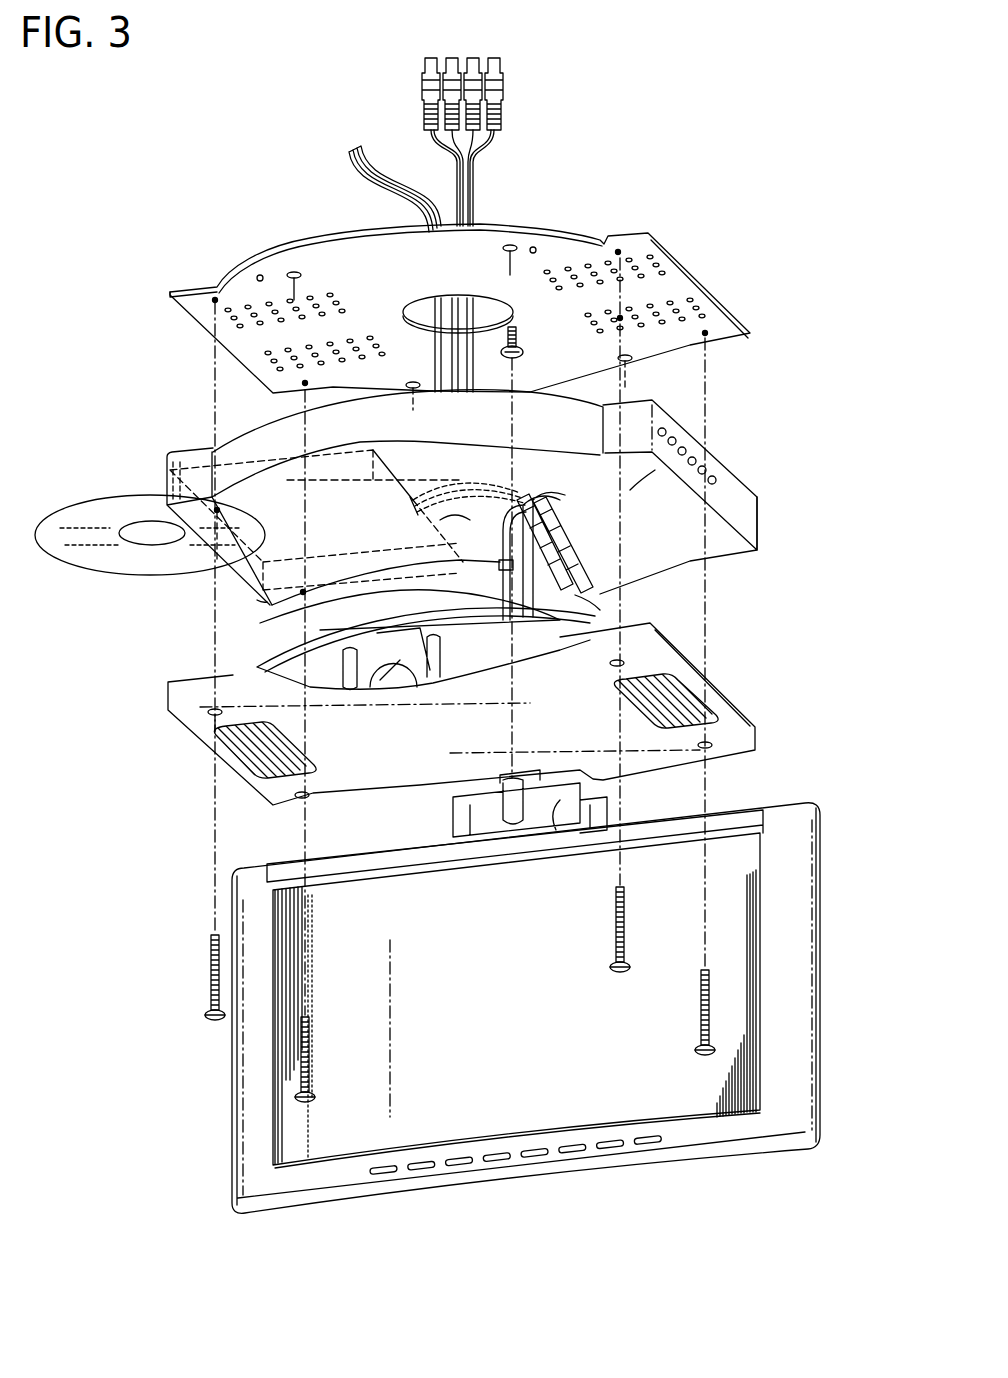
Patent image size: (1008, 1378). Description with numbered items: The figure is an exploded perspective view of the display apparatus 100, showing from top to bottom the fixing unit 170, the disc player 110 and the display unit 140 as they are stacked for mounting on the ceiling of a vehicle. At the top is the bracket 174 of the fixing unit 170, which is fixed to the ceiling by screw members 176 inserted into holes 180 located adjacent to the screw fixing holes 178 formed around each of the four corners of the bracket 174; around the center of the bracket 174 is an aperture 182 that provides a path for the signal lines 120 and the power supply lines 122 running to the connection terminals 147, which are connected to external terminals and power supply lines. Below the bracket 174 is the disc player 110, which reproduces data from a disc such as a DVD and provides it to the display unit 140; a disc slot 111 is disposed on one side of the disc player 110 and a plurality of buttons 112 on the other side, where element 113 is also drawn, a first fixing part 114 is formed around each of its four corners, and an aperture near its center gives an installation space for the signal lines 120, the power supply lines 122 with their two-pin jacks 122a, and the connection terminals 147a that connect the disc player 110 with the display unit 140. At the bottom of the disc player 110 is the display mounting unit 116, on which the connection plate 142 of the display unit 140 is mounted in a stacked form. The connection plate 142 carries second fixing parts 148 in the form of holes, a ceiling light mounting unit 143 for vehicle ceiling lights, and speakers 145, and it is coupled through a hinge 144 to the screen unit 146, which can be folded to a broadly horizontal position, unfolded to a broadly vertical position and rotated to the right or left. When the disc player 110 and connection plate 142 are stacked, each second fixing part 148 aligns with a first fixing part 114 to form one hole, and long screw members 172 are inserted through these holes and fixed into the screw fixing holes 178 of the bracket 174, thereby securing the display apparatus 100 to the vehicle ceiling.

The display apparatus 100 is at (235, 230).
The disc player 110 is at (740, 489).
The disc slot 111 is at (167, 472).
The buttons 112 is at (672, 428).
The side face 113 is at (665, 458).
The first fixing part 114 is at (217, 512).
The display mounting unit 116 is at (720, 533).
The signal lines 120 is at (493, 147).
The power supply lines 122 is at (433, 203).
The 2-pin jacks 122a is at (257, 600).
The display unit 140 is at (805, 800).
The connection plate 142 is at (755, 727).
The ceiling light mounting unit 143 is at (243, 780).
The hinge 144 is at (437, 813).
The speakers 145 is at (707, 703).
The screen unit 146 is at (353, 1115).
The connection terminals 147 is at (425, 72).
The connection terminals 147a is at (613, 580).
The second fixing parts 148 is at (172, 723).
The fixing unit 170 is at (673, 254).
The screw members 172 is at (208, 970).
The bracket 174 is at (693, 298).
The screw members 176 is at (630, 370).
The screw fixing hole 178 is at (215, 302).
The holes 180 is at (533, 248).
The aperture 182 is at (403, 312).